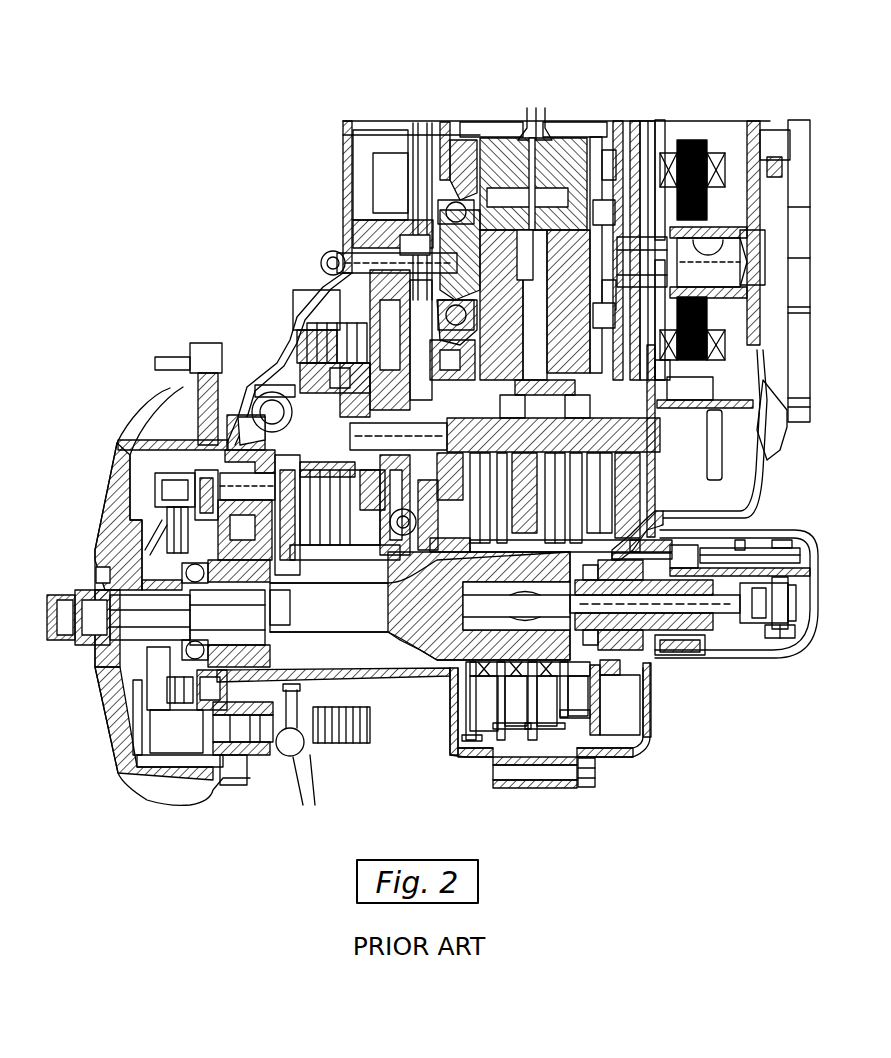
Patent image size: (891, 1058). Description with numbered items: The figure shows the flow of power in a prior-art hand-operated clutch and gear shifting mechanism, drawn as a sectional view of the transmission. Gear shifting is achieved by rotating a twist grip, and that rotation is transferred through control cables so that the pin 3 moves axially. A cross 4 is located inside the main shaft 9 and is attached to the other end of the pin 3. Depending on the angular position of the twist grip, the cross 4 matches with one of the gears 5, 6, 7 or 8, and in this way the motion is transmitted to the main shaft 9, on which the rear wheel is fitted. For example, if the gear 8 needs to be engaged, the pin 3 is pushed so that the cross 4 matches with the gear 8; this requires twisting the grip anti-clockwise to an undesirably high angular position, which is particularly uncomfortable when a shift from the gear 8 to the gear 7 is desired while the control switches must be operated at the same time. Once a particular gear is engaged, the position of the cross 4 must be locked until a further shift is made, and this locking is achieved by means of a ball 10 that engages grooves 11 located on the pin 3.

The pin 3 is at (740, 648).
The cross 4 is at (590, 663).
The gear 5 is at (582, 698).
The gear 6 is at (560, 727).
The gear 7 is at (508, 742).
The gear 8 is at (474, 737).
The main shaft 9 is at (348, 622).
The ball 10 is at (663, 668).
The grooves 11 is at (690, 650).